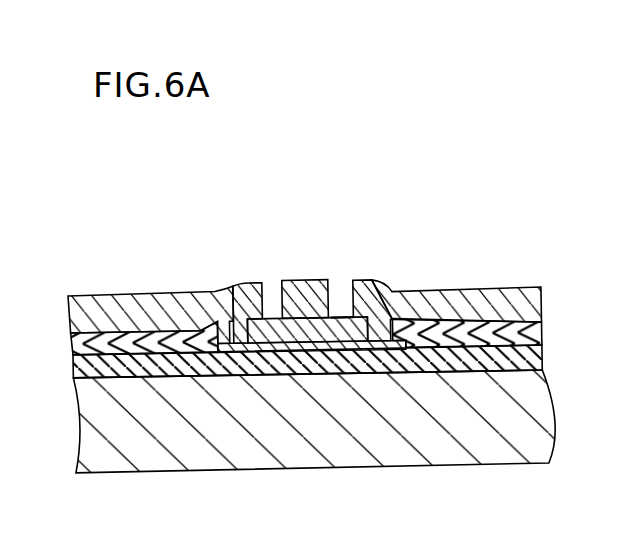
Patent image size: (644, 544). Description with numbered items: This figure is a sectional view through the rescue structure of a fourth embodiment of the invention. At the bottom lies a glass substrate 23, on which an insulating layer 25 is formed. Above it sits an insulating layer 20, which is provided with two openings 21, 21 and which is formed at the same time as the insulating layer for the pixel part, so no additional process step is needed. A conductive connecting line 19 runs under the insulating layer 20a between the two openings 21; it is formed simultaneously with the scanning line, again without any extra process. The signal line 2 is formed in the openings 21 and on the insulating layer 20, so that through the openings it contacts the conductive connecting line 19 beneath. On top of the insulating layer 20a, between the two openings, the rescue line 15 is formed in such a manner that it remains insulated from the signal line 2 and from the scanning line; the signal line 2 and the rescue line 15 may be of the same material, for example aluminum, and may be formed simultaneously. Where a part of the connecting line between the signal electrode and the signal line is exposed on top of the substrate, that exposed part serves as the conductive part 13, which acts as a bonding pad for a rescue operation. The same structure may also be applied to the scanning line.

The signal line 2 is at (452, 295).
The conductive part 13 is at (120, 302).
The rescue line 15 is at (300, 282).
The conductive connecting line 19 is at (337, 318).
The insulating layer 20 is at (67, 348).
The insulating layer 20a is at (270, 325).
The openings 21 is at (227, 295).
The glass substrate 23 is at (457, 449).
The insulating layer 25 is at (538, 358).